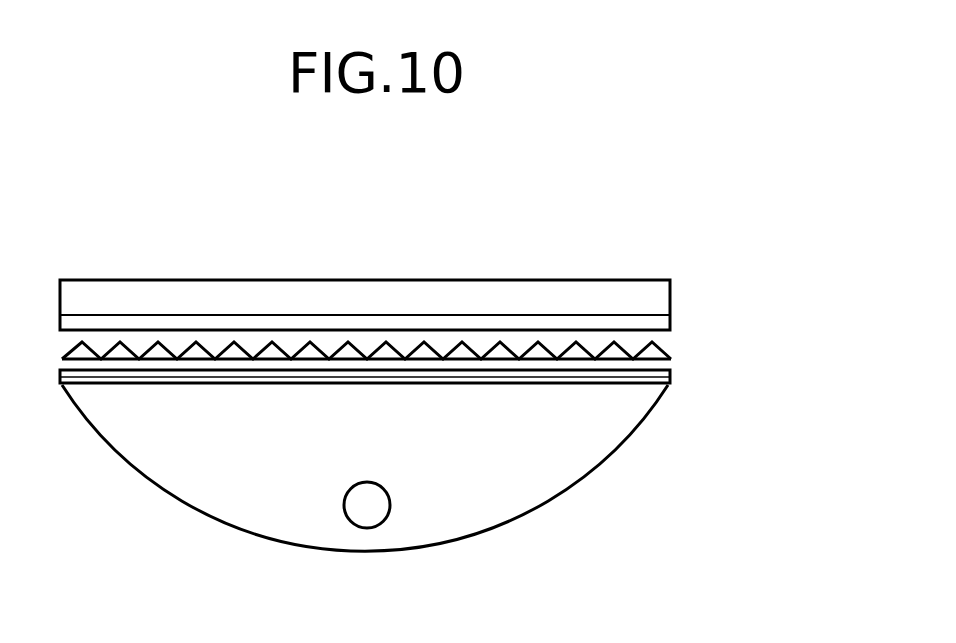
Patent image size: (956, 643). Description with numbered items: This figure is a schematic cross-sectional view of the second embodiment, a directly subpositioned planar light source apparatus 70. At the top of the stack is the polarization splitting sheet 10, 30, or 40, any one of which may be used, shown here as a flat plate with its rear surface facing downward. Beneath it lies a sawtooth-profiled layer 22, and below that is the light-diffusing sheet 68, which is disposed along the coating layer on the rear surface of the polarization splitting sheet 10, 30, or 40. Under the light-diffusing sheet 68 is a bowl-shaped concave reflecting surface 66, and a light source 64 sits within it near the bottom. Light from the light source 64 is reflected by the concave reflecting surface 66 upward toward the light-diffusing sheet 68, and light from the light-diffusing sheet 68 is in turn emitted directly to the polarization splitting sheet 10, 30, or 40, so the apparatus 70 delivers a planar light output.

The polarization splitting sheet 10 is at (444, 252).
The polarization splitting sheet 30 is at (444, 252).
The polarization splitting sheet 40 is at (444, 252).
The directly subpositioned planar light source apparatus 70 is at (195, 270).
The prism sheet 22 is at (670, 350).
The light-diffusing sheet 68 is at (672, 375).
The concave reflecting surface 66 is at (537, 510).
The light source 64 is at (367, 528).